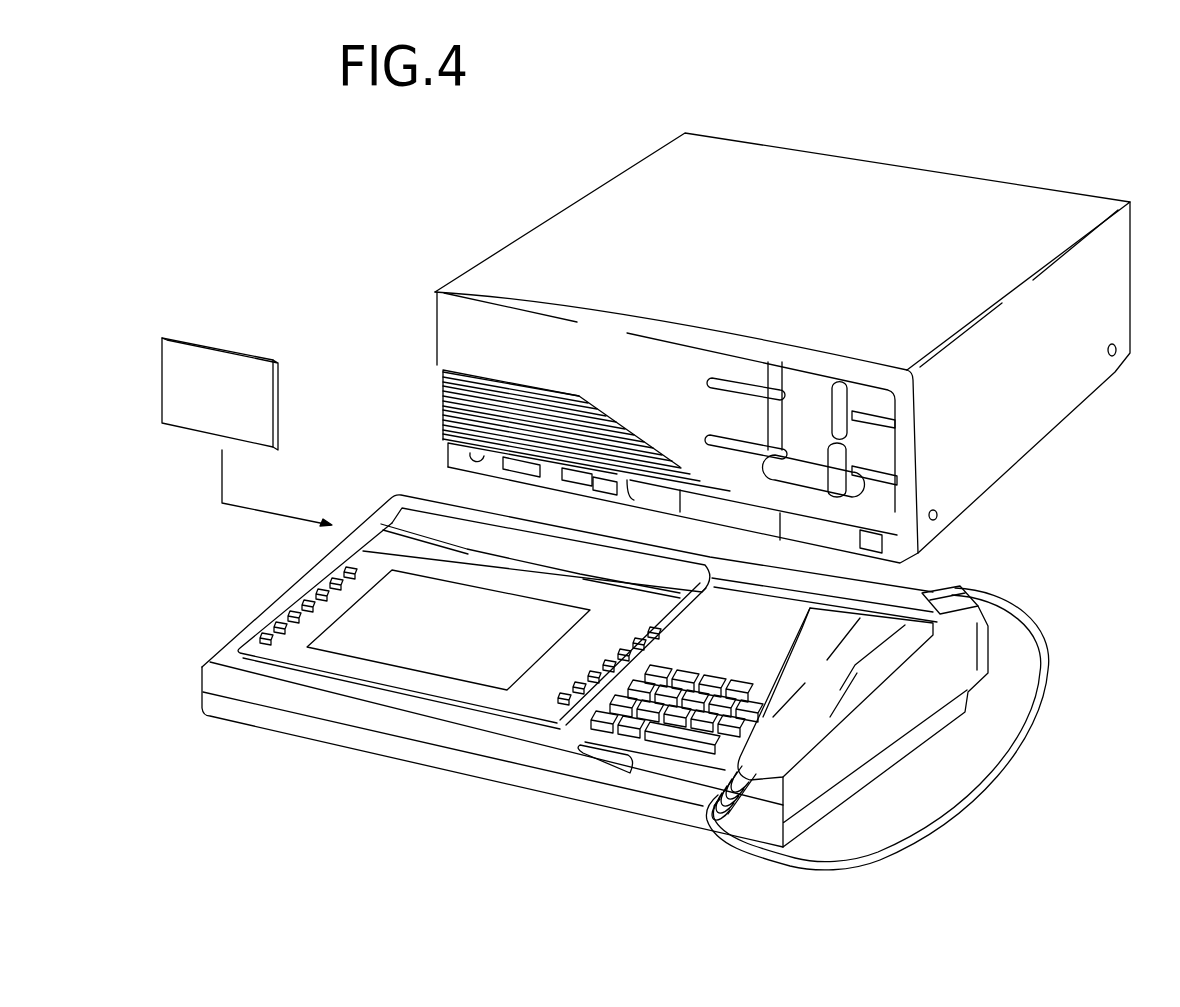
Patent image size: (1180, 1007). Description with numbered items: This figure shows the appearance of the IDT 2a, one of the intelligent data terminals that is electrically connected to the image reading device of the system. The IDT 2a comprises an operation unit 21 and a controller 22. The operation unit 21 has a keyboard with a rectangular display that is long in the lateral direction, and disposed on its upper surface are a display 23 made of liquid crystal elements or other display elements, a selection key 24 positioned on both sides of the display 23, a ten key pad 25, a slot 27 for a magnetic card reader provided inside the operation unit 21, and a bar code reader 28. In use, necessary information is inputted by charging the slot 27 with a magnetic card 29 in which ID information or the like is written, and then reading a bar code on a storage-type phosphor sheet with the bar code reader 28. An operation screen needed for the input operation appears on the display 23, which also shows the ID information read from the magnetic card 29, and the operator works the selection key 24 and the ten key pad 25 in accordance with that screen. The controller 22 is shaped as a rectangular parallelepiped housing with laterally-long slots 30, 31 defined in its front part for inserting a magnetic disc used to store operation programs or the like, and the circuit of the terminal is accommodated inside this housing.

The IDT 2a is at (535, 197).
The controller 22 is at (888, 190).
The magnetic card 29 is at (233, 370).
The slot 27 is at (395, 537).
The slot 30 is at (897, 422).
The slot 31 is at (897, 477).
The selection key 24 is at (262, 633).
The operation unit 21 is at (365, 715).
The display 23 is at (465, 670).
The ten key pad 25 is at (630, 772).
The bar code reader 28 is at (768, 750).